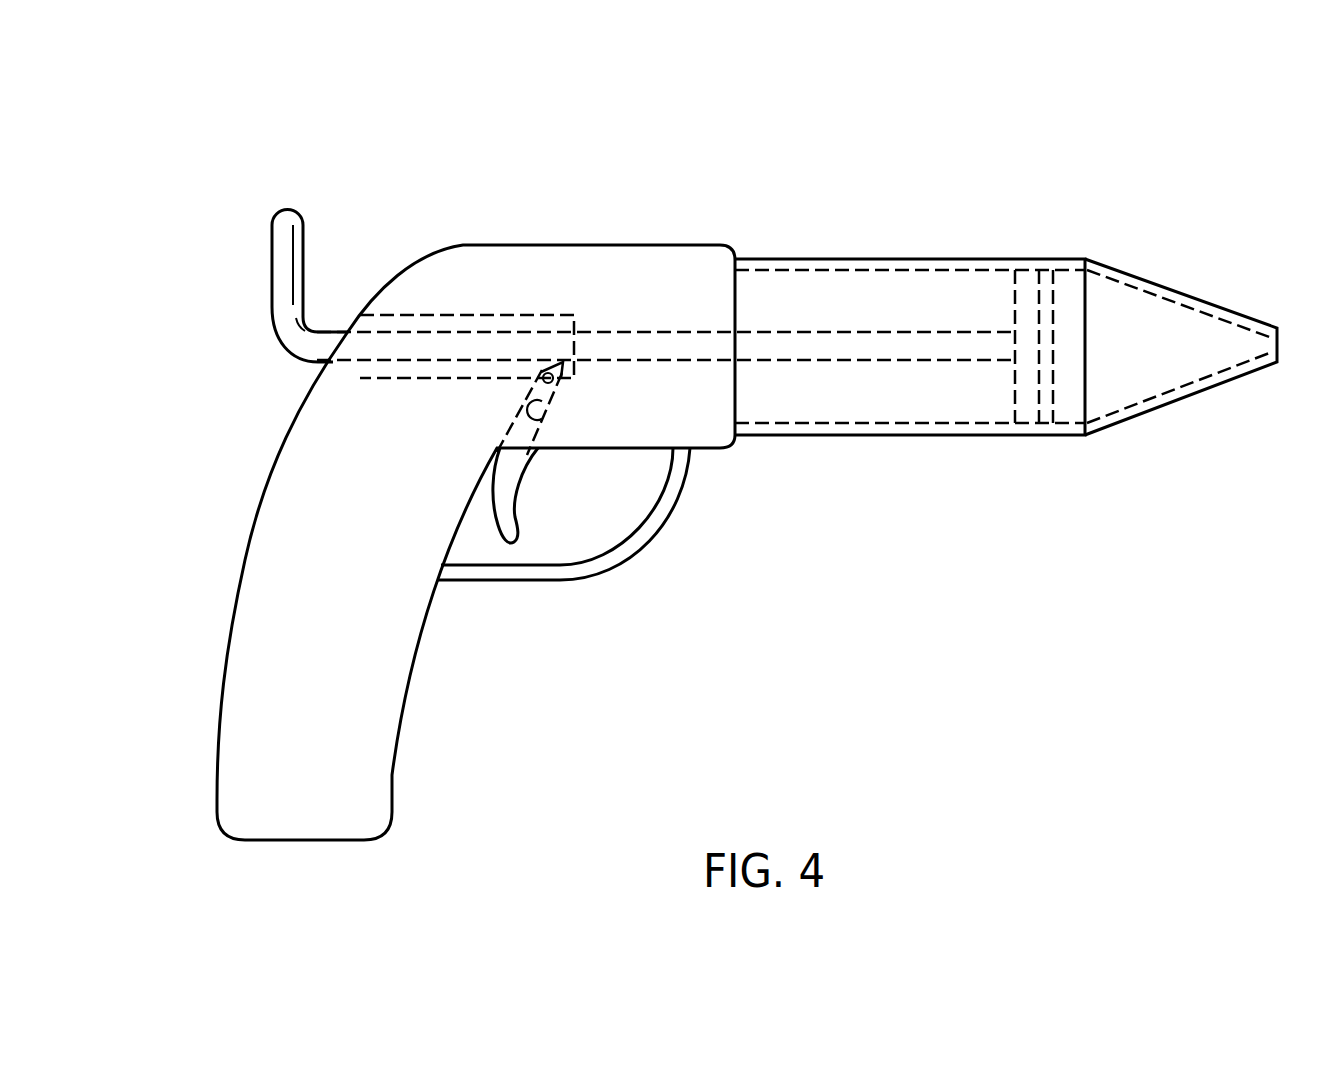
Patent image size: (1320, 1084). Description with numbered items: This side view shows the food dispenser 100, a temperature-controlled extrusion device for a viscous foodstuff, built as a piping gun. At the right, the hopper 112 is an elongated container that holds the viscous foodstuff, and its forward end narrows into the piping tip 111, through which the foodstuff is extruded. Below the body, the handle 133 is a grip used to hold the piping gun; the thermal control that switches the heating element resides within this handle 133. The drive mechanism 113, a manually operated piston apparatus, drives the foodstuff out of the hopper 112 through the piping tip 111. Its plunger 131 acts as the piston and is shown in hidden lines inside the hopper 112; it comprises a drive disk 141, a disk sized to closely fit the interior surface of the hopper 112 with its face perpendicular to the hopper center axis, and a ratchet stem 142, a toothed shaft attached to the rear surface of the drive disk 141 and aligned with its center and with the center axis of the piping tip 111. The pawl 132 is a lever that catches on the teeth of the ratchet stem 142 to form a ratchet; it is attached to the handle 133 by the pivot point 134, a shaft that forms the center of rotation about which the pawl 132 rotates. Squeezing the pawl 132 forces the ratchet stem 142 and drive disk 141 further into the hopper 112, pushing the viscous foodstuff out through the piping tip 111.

The food dispenser 100 is at (222, 176).
The piping tip 111 is at (1172, 288).
The hopper 112 is at (975, 258).
The drive mechanism 113 is at (397, 272).
The plunger 131 is at (817, 315).
The pawl 132 is at (515, 517).
The handle 133 is at (545, 412).
The pivot point 134 is at (363, 712).
The drive disk 141 is at (1027, 407).
The ratchet stem 142 is at (648, 338).